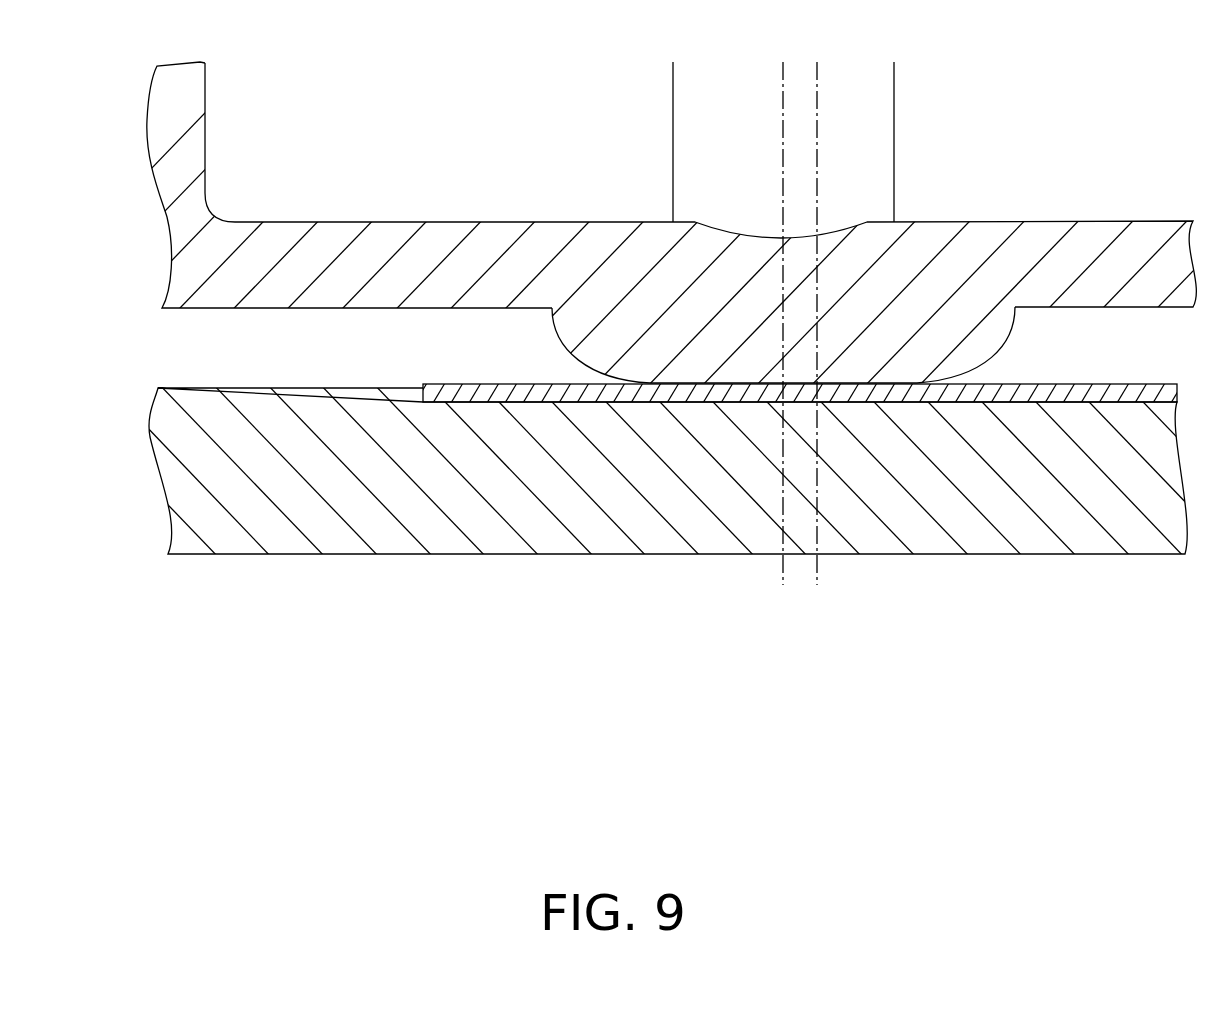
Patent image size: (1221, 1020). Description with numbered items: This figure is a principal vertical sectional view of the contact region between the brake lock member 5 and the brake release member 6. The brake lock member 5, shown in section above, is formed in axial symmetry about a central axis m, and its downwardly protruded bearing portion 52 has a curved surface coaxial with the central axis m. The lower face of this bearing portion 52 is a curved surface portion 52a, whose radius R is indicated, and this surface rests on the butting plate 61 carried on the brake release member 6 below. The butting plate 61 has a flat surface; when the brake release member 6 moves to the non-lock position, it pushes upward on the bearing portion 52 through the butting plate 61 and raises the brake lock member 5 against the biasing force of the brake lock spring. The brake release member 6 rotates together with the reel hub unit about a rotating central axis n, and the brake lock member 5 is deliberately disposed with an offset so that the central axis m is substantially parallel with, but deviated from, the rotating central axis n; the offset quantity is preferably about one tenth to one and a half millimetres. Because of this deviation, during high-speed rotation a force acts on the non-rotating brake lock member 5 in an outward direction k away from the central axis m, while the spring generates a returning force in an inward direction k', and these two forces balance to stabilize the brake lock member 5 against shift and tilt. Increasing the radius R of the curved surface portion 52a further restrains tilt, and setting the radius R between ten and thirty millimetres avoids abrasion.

The brake lock member 5 is at (1140, 206).
The bearing portion 52 is at (1014, 342).
The curved surface portion 52a is at (862, 385).
The brake release member 6 is at (433, 561).
The butting plate 61 is at (553, 393).
The radius of the curved-surface portion R is at (758, 173).
The central axis m is at (782, 518).
The rotating central axis n is at (818, 562).
The outward direction k is at (687, 654).
The inward direction k' is at (716, 686).